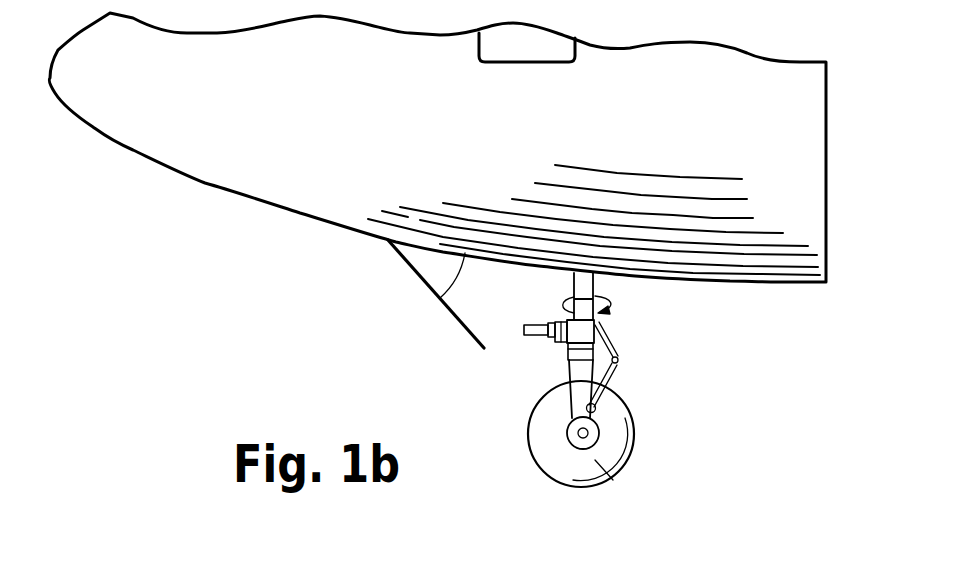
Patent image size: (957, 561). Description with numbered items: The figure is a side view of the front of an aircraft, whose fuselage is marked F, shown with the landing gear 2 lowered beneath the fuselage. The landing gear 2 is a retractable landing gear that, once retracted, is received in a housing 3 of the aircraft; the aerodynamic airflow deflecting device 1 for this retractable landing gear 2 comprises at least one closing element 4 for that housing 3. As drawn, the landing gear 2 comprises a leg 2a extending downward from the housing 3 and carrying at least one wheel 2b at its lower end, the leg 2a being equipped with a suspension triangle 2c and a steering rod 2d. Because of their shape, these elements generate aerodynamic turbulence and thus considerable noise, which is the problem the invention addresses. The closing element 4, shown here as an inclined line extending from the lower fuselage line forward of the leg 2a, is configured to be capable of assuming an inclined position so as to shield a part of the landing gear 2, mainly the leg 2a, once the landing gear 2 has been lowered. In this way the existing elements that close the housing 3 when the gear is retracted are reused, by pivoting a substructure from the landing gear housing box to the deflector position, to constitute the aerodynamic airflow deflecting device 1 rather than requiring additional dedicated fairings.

The aircraft fuselage F is at (205, 183).
The aerodynamic airflow deflecting device 1 is at (430, 325).
The retractable landing gear 2 is at (633, 388).
The leg 2a is at (568, 374).
The wheel 2b is at (610, 475).
The suspension triangle 2c is at (609, 343).
The steering rod 2d is at (530, 336).
The housing 3 is at (627, 295).
The closing element 4 is at (410, 265).